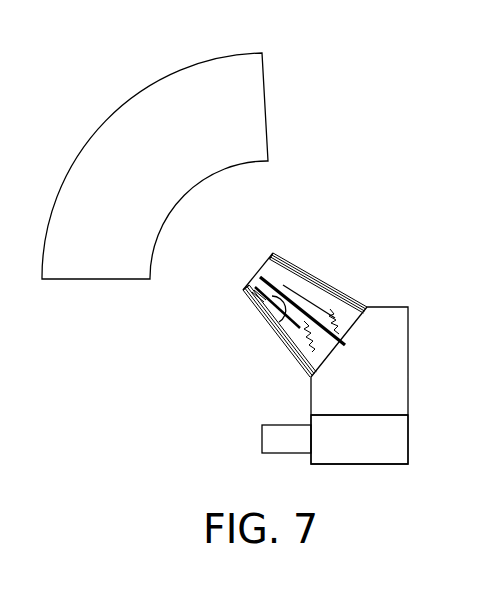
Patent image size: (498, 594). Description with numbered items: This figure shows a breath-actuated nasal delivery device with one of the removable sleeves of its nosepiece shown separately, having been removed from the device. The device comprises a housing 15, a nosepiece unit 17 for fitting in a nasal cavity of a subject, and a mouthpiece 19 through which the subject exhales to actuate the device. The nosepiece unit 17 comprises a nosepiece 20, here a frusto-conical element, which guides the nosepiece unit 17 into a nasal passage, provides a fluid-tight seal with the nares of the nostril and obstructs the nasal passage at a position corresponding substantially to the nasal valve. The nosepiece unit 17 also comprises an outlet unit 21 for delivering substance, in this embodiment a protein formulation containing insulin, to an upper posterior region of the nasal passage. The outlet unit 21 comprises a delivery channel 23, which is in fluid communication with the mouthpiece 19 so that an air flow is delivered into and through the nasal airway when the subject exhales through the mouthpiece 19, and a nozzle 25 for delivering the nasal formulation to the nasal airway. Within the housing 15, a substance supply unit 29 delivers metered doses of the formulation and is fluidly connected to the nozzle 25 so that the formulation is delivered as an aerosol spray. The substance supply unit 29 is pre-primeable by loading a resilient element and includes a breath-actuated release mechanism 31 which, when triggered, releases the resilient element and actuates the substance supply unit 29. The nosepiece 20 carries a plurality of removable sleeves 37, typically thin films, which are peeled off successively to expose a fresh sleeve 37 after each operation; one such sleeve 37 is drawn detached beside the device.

The housing 15 is at (409, 327).
The nosepiece unit 17 is at (317, 272).
The mouthpiece 19 is at (290, 445).
The nosepiece 20 is at (360, 291).
The outlet unit 21 is at (291, 281).
The delivery channel 23 is at (267, 297).
The nozzle 25 is at (278, 317).
The substance supply unit 29 is at (398, 387).
The breath-actuated release mechanism 31 is at (398, 445).
The removable sleeve 37 is at (260, 102).